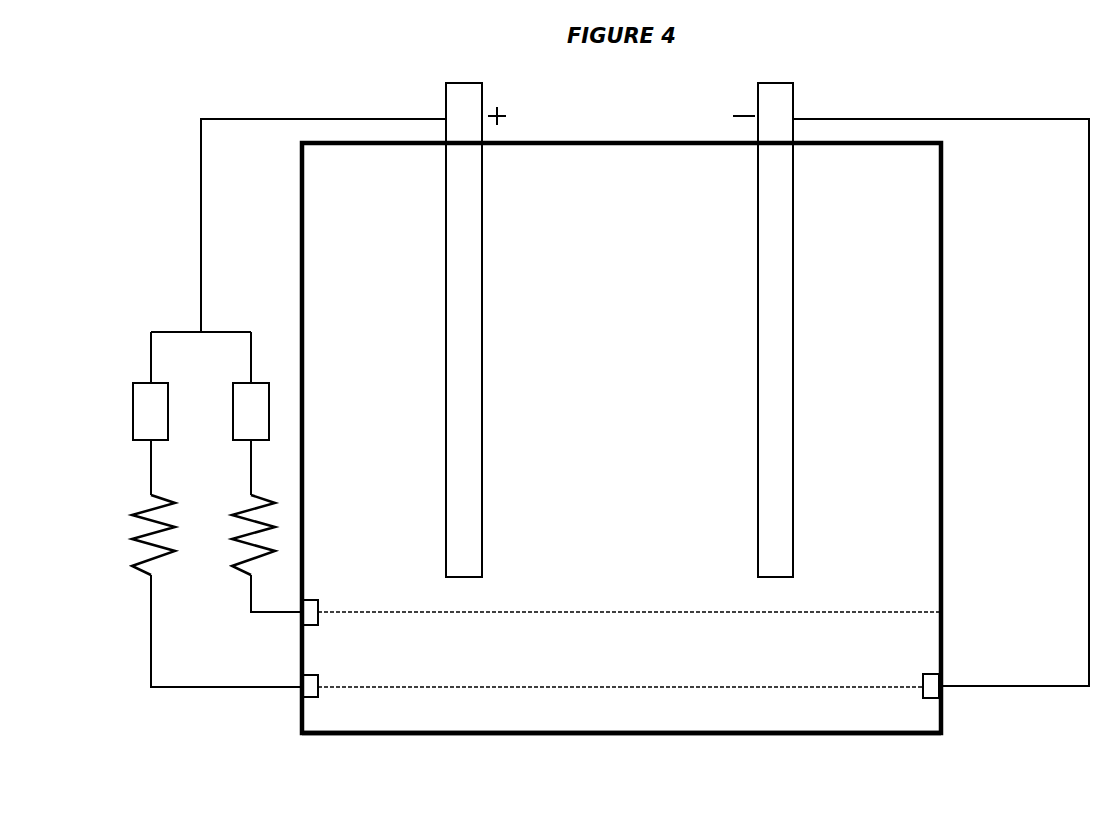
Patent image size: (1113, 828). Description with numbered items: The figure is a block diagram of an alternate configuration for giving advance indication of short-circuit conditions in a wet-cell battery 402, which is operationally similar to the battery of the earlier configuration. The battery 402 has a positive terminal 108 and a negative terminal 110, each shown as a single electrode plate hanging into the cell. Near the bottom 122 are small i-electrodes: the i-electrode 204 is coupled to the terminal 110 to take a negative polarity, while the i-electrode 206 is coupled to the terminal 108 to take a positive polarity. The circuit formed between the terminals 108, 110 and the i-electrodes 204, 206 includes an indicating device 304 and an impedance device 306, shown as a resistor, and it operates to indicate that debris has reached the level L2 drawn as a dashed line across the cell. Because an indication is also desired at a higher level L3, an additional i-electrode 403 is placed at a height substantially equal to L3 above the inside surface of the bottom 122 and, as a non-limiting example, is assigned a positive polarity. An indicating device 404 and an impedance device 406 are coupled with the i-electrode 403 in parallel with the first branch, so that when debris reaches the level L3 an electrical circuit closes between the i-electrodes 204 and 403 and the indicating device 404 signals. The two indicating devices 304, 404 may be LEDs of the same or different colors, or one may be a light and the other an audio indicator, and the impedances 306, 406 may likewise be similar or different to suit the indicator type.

The terminal 108 is at (453, 109).
The terminal 110 is at (786, 102).
The battery 402 is at (941, 279).
The bottom 122 is at (944, 736).
The indicating device 304 is at (150, 411).
The indicating device 404 is at (251, 411).
The impedance device 306 is at (127, 540).
The impedance device 406 is at (251, 506).
The i-electrode 403 is at (318, 604).
The i-electrode 206 is at (304, 680).
The i-electrode 204 is at (936, 680).
The level L2 is at (397, 688).
The level L3 is at (530, 613).